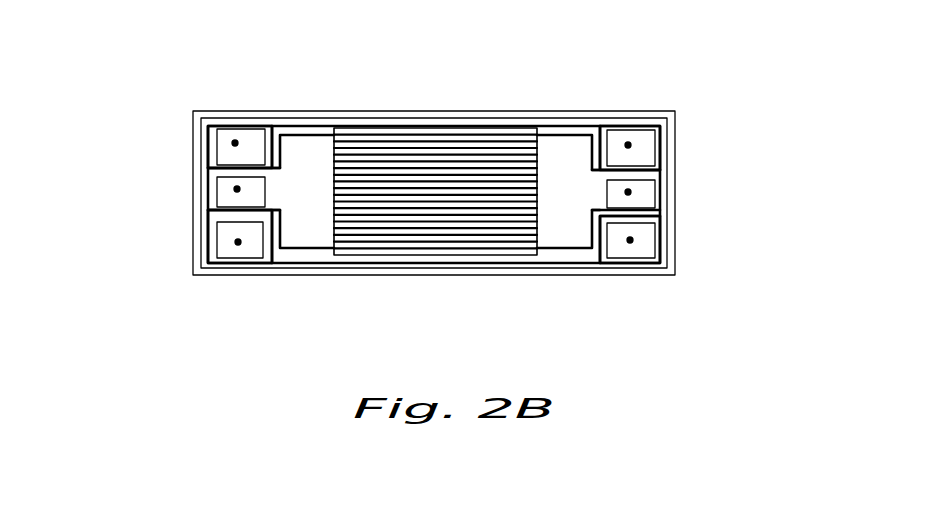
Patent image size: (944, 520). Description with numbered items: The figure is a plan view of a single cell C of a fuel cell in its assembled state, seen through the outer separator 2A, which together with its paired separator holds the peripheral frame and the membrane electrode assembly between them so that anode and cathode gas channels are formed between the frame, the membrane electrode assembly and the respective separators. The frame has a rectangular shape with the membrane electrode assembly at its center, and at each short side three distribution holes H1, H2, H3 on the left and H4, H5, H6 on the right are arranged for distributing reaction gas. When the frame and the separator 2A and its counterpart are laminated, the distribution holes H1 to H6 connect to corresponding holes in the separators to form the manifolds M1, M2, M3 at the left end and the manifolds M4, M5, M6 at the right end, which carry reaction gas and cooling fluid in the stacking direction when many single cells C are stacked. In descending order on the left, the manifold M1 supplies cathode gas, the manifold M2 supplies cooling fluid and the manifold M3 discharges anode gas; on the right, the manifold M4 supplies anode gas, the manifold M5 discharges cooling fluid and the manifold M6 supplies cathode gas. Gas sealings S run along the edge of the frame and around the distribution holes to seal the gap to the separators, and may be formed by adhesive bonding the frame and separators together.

The single cell C is at (647, 93).
The separator 2A is at (552, 117).
The gas sealing S is at (487, 129).
The distribution hole H1 is at (207, 130).
The distribution hole H2 is at (207, 183).
The distribution hole H3 is at (212, 232).
The distribution hole H4 is at (663, 138).
The distribution hole H5 is at (663, 181).
The distribution hole H6 is at (663, 238).
The manifold M1 is at (235, 143).
The manifold M2 is at (237, 189).
The manifold M3 is at (238, 242).
The manifold M4 is at (628, 145).
The manifold M5 is at (628, 192).
The manifold M6 is at (630, 240).